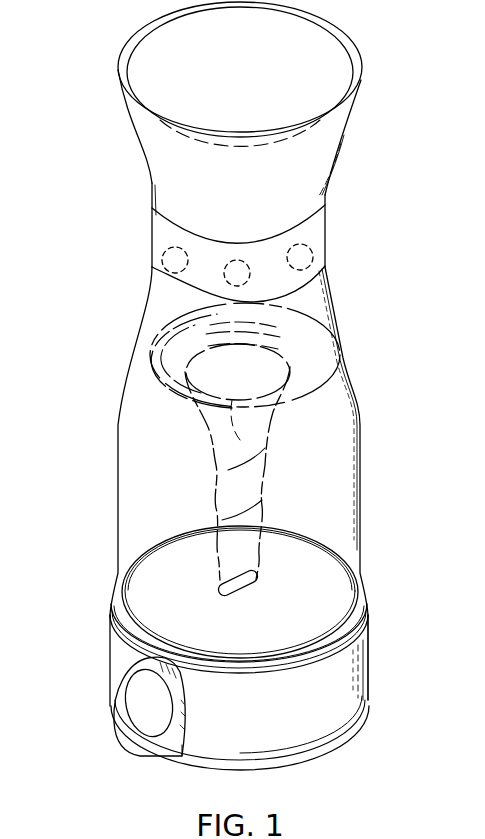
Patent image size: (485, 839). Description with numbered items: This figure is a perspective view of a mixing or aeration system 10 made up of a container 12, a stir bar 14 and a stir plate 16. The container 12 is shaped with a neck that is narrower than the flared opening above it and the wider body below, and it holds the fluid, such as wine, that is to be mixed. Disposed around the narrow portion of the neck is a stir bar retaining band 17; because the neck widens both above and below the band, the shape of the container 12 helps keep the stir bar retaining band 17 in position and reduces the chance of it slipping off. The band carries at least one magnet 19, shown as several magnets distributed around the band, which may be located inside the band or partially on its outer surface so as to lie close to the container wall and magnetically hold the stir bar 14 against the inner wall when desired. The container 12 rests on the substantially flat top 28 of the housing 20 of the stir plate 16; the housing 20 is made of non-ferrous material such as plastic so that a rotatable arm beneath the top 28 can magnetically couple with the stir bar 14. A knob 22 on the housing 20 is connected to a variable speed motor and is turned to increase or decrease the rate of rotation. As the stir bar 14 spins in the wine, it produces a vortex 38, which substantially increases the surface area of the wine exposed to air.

The mixing or aeration system 10 is at (386, 259).
The container 12 is at (116, 449).
The stir bar 14 is at (250, 592).
The stir plate 16 is at (106, 621).
The stir bar retaining band 17 is at (136, 229).
The magnet 19 is at (241, 257).
The housing 20 is at (370, 636).
The knob 22 is at (142, 726).
The top 28 is at (165, 558).
The vortex 38 is at (212, 445).